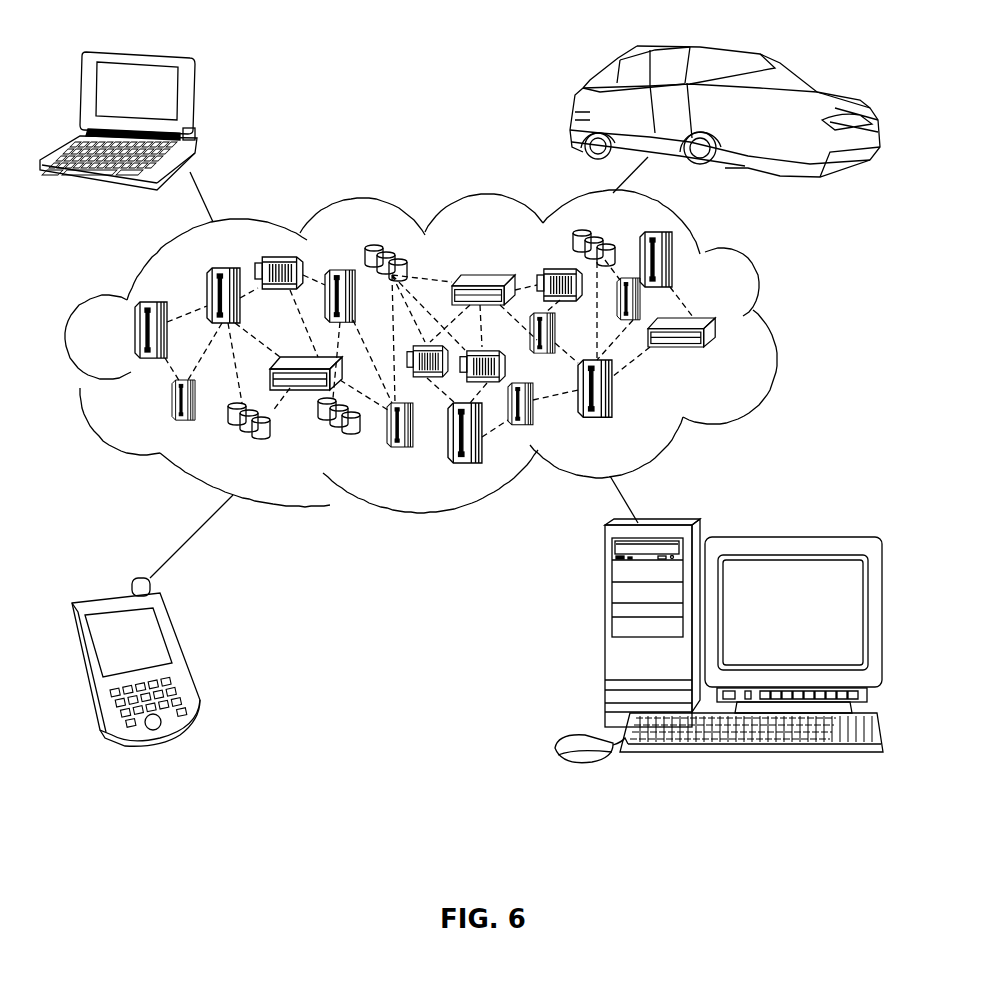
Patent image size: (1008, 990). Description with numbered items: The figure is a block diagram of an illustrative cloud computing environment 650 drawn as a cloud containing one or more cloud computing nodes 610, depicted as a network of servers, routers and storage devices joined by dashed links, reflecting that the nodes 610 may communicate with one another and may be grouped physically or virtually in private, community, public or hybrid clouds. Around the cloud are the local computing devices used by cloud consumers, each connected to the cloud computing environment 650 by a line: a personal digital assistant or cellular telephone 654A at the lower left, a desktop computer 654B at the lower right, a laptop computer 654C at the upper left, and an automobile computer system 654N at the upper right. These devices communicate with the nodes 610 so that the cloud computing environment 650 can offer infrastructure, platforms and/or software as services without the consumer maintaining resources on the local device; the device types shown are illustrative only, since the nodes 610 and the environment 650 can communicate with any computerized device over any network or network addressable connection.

The cloud computing nodes 610 is at (733, 350).
The cloud computing environment 650 is at (758, 292).
The personal digital assistant (PDA) or cellular telephone 654A is at (183, 652).
The desktop computer 654B is at (605, 632).
The laptop computer 654C is at (196, 99).
The automobile computer system 654N is at (572, 100).